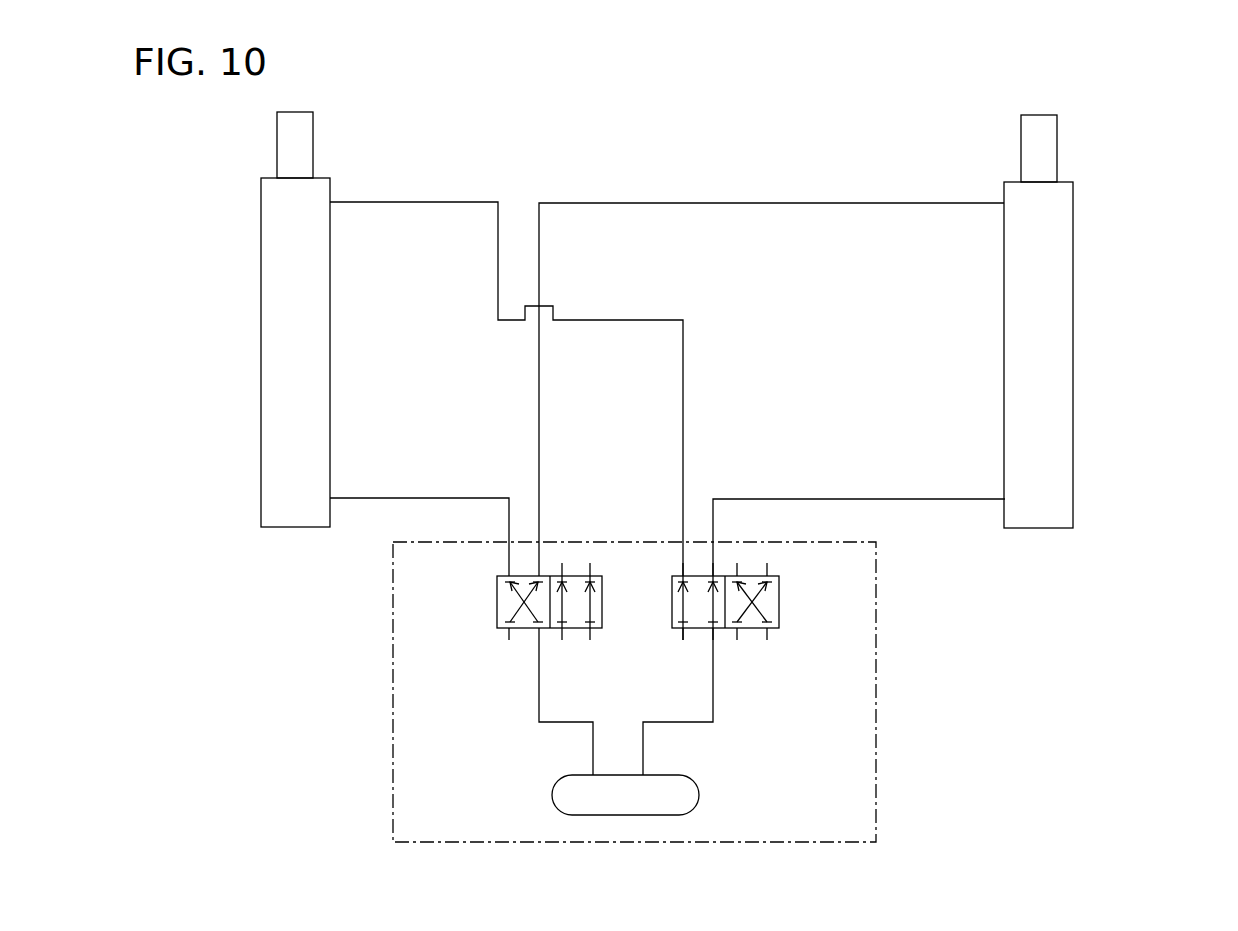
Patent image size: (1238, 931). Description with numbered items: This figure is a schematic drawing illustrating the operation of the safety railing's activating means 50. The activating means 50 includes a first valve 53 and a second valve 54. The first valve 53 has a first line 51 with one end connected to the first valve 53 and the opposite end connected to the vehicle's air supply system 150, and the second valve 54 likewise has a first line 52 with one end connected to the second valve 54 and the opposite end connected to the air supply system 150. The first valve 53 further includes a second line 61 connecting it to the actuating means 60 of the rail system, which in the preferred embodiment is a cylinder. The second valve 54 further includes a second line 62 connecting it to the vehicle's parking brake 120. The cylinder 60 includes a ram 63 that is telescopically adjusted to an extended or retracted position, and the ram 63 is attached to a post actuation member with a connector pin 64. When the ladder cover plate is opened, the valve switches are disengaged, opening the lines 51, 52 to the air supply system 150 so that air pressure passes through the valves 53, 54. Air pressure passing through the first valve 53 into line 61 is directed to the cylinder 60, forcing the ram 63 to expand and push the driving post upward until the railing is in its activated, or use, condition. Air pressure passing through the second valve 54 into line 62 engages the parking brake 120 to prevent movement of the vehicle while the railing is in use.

The activating means 50 is at (634, 692).
The first line 51 is at (537, 700).
The first line 52 is at (715, 700).
The first valve 53 is at (497, 603).
The second valve 54 is at (780, 595).
The actuating means 60 is at (262, 397).
The second line 61 is at (485, 493).
The second line 62 is at (850, 495).
The ram 63 is at (357, 203).
The connector pin 64 is at (820, 208).
The parking brake 120 is at (1073, 437).
The air supply system 150 is at (625, 795).